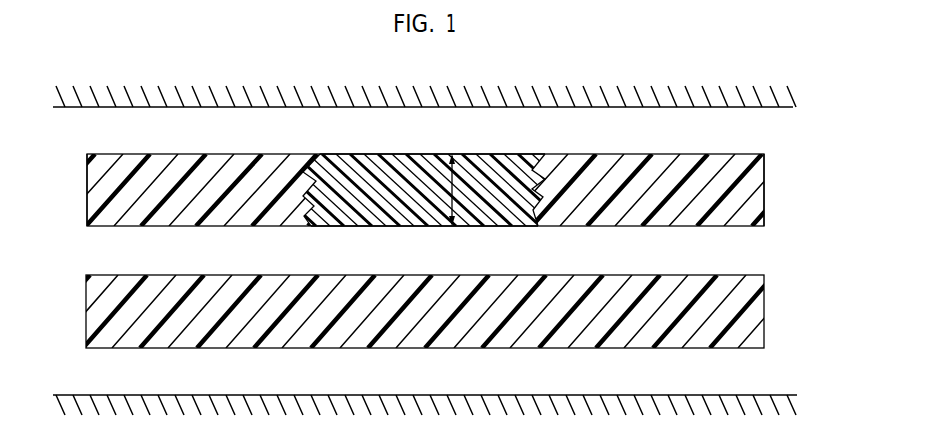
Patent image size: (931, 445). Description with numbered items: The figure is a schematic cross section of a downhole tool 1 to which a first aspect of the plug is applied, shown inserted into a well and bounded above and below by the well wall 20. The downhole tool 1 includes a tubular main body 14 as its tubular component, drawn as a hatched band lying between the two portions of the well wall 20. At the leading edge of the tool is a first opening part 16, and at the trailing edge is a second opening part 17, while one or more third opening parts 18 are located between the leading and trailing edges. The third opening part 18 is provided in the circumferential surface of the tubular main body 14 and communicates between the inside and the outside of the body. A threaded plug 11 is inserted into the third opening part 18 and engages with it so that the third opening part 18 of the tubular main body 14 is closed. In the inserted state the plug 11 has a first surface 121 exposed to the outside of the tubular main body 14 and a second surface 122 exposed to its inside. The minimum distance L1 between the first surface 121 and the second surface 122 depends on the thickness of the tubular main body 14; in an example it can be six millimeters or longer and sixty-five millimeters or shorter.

The downhole tool 1 is at (782, 165).
The plug 11 is at (367, 162).
The tubular main body 14 is at (757, 310).
The first opening part 16 is at (99, 226).
The second opening part 17 is at (749, 226).
The third opening part 18 is at (532, 162).
The well wall 20 is at (772, 107).
The first surface 121 is at (428, 152).
The second surface 122 is at (425, 228).
The minimum distance L1 is at (454, 193).